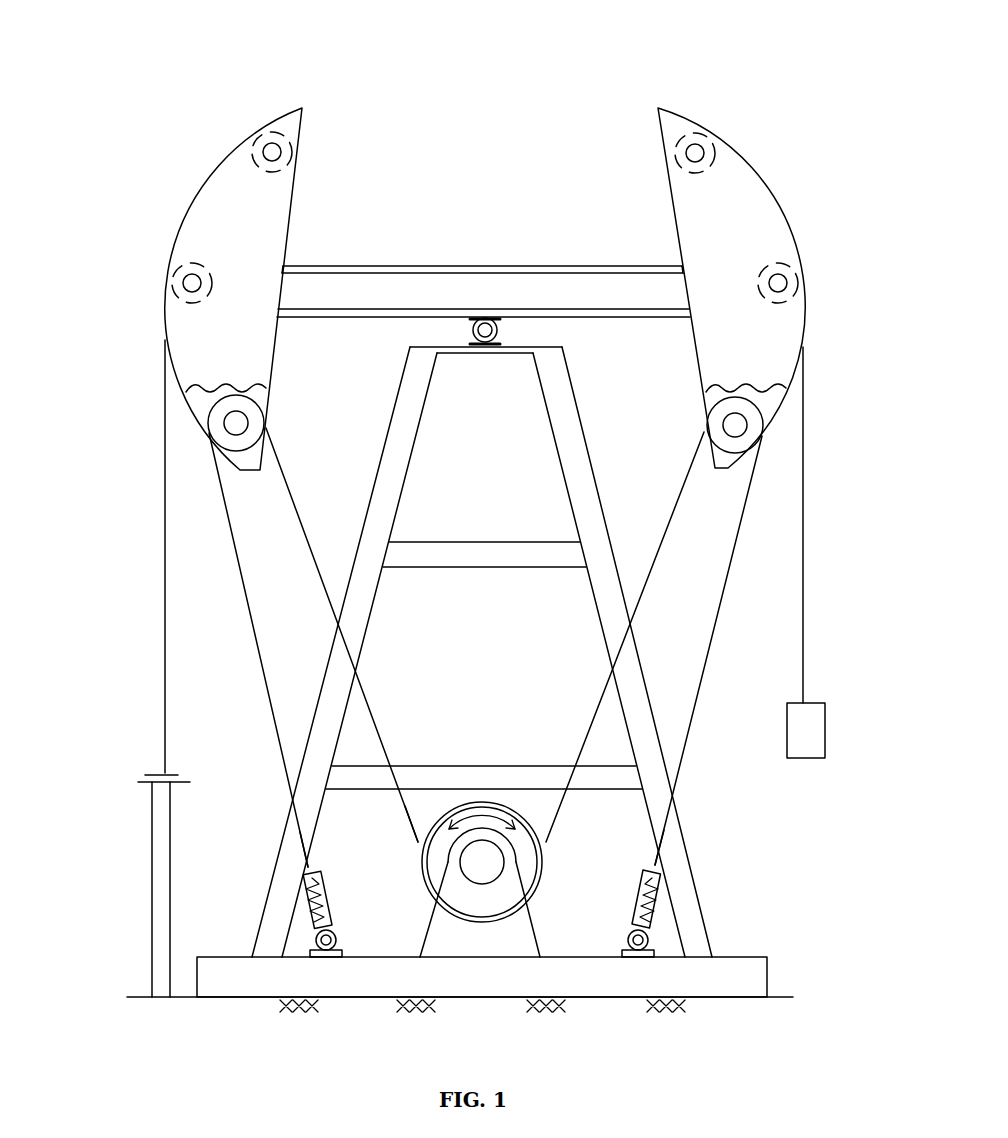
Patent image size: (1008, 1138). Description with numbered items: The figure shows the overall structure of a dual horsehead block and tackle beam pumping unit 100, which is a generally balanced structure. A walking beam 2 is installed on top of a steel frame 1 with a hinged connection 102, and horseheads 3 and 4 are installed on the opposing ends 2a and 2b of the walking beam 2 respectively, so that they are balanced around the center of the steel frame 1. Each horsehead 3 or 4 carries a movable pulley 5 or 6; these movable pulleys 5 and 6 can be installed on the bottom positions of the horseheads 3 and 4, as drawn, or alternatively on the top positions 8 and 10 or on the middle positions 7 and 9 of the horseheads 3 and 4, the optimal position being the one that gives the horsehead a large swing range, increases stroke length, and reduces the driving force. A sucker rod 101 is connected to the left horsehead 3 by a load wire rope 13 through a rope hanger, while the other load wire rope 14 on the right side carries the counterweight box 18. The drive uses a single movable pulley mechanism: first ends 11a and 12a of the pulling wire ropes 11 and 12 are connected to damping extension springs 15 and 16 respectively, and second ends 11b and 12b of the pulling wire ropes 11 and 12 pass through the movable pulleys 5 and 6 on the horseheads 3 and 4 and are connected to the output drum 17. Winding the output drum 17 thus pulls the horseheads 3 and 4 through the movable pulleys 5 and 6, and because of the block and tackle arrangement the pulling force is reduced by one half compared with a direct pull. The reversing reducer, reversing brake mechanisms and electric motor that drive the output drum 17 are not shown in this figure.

The dual horsehead block and tackle beam pumping unit 100 is at (505, 82).
The steel frame 1 is at (595, 487).
The walking beam 2 is at (395, 265).
The end of walking beam 2a is at (283, 265).
The end of walking beam 2b is at (682, 265).
The horsehead 3 is at (195, 213).
The horsehead 4 is at (745, 182).
The movable pulley 5 is at (257, 420).
The movable pulley 6 is at (722, 433).
The middle position 7 is at (191, 284).
The top position 8 is at (277, 150).
The middle position 9 is at (797, 280).
The top position 10 is at (693, 152).
The pulling wire rope 11 is at (270, 688).
The first end of pulling wire rope 11a is at (308, 867).
The second end of pulling wire rope 11b is at (418, 842).
The pulling wire rope 12 is at (702, 677).
The first end of pulling wire rope 12a is at (658, 860).
The second end of pulling wire rope 12b is at (548, 855).
The load wire rope 13 is at (165, 685).
The load wire rope 14 is at (803, 645).
The damping extension spring 15 is at (327, 903).
The damping extension spring 16 is at (637, 910).
The output drum 17 is at (528, 868).
The counterweight box 18 is at (806, 730).
The sucker rod 101 is at (165, 925).
The hinged connection 102 is at (500, 330).